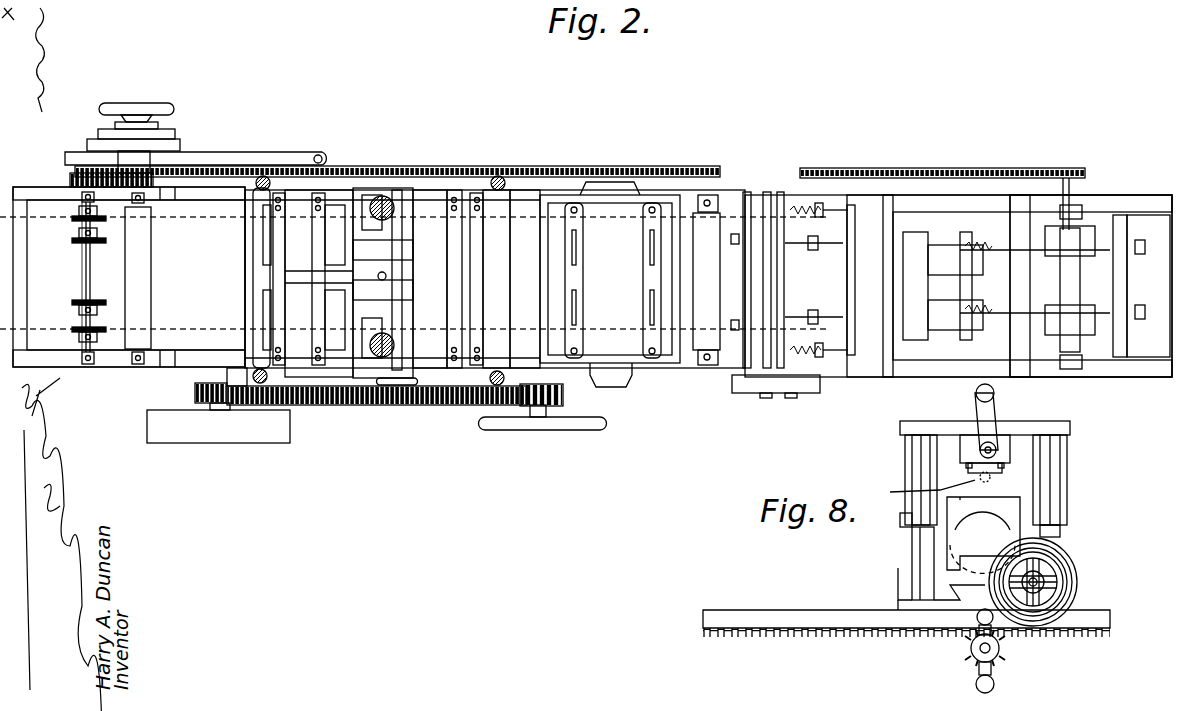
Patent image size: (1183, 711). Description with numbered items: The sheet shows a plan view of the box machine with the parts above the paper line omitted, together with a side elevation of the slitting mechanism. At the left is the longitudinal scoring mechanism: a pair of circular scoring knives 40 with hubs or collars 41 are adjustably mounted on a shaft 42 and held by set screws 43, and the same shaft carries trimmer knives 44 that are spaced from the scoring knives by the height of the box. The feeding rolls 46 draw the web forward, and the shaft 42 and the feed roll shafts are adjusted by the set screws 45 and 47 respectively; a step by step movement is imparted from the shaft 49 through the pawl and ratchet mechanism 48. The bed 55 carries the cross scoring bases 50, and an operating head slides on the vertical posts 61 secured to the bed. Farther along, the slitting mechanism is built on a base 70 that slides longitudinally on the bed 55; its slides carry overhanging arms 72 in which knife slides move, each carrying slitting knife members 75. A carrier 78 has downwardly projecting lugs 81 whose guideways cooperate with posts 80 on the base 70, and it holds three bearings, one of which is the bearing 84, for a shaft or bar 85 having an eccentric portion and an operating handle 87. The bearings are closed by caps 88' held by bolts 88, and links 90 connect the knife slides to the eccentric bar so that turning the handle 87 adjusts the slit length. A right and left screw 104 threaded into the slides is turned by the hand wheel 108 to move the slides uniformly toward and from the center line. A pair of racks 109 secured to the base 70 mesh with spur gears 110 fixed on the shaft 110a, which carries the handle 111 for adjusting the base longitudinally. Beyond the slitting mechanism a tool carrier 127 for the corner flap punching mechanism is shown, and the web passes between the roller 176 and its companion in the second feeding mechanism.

In FIG. 2, the step by step feeding mechanism 48 is at (176, 150).
In FIG. 2, the vertical posts 61 is at (264, 176).
In FIG. 2, the tool carrier 127 is at (477, 192).
In FIG. 2, the overhanging arm 72 is at (395, 208).
In FIG. 8, the overhanging arm 72 is at (983, 535).
In FIG. 2, the trimmer knives 44 is at (74, 220).
In FIG. 2, the set screws 43 is at (79, 233).
In FIG. 2, the circular scoring knives 40 is at (72, 245).
In FIG. 2, the shaft 42 is at (100, 278).
In FIG. 2, the feeding rolls 46 is at (146, 281).
In FIG. 2, the hubs or collars 41 is at (79, 310).
In FIG. 2, the set screws 45 is at (88, 364).
In FIG. 2, the set screws 47 is at (138, 364).
In FIG. 2, the bed 55 is at (255, 251).
In FIG. 2, the bases 50 is at (308, 283).
In FIG. 2, the shaft 49 is at (305, 390).
In FIG. 2, the hand wheel 108 is at (408, 386).
In FIG. 8, the hand wheel 108 is at (1070, 590).
In FIG. 2, the roller 176 is at (703, 335).
In FIG. 8, the carrier 78 is at (915, 421).
In FIG. 8, the shaft or bar 85 is at (990, 445).
In FIG. 8, the operating handle 87 is at (992, 405).
In FIG. 8, the bearing 84 is at (1000, 445).
In FIG. 8, the caps 88' is at (1039, 458).
In FIG. 8, the downwardly projecting lugs 81 is at (912, 460).
In FIG. 8, the bolts 88 is at (917, 497).
In FIG. 8, the links 90 is at (1040, 493).
In FIG. 8, the knife members 75 is at (905, 525).
In FIG. 8, the posts 80 is at (914, 556).
In FIG. 8, the base 70 is at (898, 598).
In FIG. 8, the racks 109 is at (787, 595).
In FIG. 8, the right and left screw 104 is at (1045, 578).
In FIG. 8, the spur gears 110 is at (968, 650).
In FIG. 8, the shaft 110a is at (972, 658).
In FIG. 8, the handle 111 is at (995, 672).